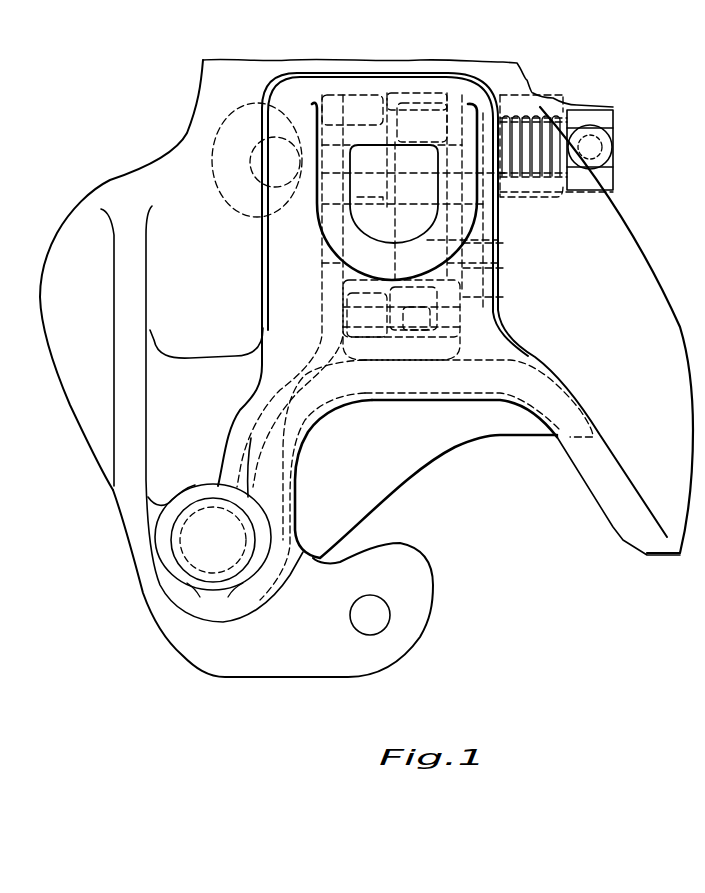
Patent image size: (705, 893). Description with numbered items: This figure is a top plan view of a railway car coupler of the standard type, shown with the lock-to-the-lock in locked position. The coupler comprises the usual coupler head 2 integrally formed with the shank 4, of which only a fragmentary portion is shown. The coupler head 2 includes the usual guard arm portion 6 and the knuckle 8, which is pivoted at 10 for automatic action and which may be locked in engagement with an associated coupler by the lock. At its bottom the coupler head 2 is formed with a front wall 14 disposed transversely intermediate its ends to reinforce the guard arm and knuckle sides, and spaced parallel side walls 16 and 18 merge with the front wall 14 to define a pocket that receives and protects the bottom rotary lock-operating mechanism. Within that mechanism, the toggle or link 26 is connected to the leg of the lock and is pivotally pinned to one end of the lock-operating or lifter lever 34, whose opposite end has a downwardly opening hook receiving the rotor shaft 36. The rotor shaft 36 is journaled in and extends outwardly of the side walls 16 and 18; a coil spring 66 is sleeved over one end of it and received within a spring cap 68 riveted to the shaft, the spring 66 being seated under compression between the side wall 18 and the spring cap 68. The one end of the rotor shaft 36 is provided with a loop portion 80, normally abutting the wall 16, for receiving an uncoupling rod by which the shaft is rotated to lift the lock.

The coupler head 2 is at (97, 186).
The shank 4 is at (505, 62).
The guard arm portion 6 is at (655, 258).
The knuckle 8 is at (230, 673).
The knuckle pivot 10 is at (211, 541).
The front wall 14 is at (397, 402).
The side wall 16 is at (330, 272).
The side wall 18 is at (497, 267).
The toggle or link 26 is at (497, 297).
The lock-operating or lifter lever 34 is at (497, 247).
The rotor shaft 36 is at (357, 120).
The coil spring 66 is at (551, 192).
The spring cap 68 is at (617, 107).
The loop portion 80 is at (243, 214).